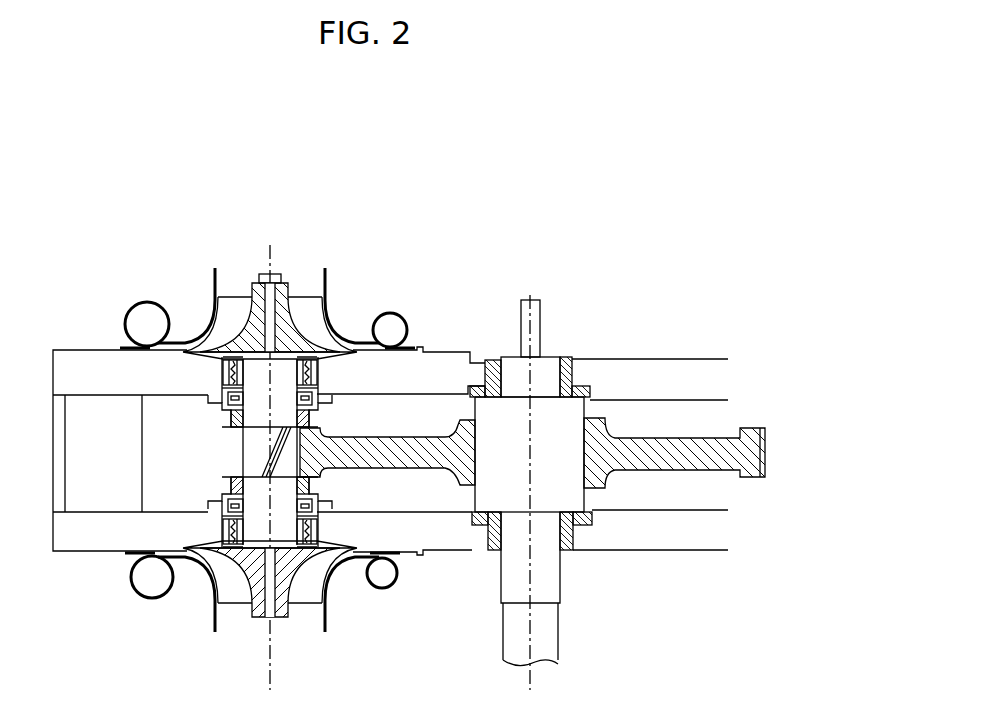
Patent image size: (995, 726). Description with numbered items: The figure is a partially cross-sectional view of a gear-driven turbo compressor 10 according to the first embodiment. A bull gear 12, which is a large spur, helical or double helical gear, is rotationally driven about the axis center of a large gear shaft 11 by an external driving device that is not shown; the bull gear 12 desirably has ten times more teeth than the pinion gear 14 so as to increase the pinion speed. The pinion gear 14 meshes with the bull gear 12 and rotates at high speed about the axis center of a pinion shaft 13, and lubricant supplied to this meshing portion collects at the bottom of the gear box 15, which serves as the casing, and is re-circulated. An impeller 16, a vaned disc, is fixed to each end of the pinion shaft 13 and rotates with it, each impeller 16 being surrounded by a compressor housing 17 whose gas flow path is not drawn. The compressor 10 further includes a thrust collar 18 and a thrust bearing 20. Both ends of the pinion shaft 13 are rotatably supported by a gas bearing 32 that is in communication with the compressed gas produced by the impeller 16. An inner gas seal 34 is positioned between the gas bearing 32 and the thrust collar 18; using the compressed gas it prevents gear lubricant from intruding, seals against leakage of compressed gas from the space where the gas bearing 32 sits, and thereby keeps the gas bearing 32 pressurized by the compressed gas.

The gear-driven turbo compressor 10 is at (132, 207).
The large gear shaft 11 is at (550, 471).
The bull gear 12 is at (692, 450).
The pinion shaft 13 is at (255, 377).
The pinion gear 14 is at (250, 450).
The gear box 15 is at (112, 538).
The impeller 16 is at (227, 350).
The compressor housing 17 is at (327, 278).
The thrust collar 18 is at (236, 421).
The thrust bearing 20 is at (487, 362).
The gas bearing 32 is at (317, 360).
The inner gas seal 34 is at (321, 407).